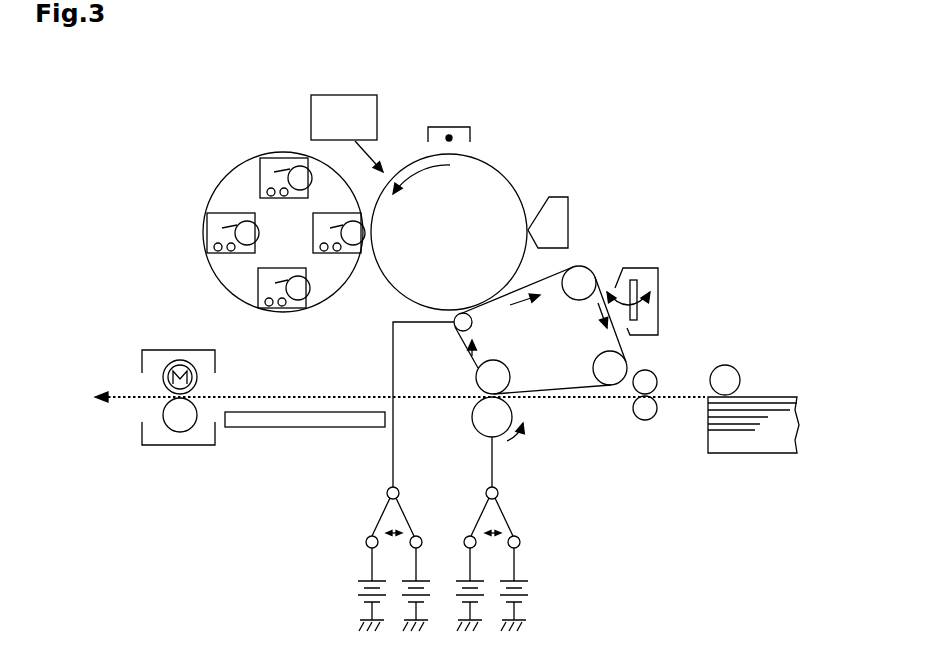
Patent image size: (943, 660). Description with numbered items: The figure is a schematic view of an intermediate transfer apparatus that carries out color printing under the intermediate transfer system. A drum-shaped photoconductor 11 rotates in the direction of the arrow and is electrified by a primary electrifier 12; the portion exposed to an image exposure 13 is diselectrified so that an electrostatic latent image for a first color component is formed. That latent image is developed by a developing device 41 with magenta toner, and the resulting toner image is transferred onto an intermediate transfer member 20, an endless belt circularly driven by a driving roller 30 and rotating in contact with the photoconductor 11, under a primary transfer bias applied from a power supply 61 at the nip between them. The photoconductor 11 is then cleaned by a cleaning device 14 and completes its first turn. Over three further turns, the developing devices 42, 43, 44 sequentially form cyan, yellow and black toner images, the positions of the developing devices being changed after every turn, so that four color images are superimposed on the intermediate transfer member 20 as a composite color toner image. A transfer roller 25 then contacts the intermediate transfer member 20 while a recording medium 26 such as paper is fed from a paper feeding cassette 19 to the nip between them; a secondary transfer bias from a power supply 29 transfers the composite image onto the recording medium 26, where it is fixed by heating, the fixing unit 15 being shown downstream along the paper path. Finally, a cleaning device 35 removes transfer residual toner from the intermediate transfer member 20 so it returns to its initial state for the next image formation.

The photoconductor 11 is at (502, 172).
The primary electrifier 12 is at (450, 122).
The image exposure 13 is at (388, 138).
The cleaning device 14 is at (562, 197).
The fixing unit 15 is at (166, 350).
The paper feeding cassette 19 is at (750, 453).
The intermediate transfer member 20 is at (562, 271).
The transfer roller 25 is at (482, 434).
The recording medium 26 is at (767, 397).
The power supply 29 is at (532, 598).
The driving roller 30 is at (584, 280).
The cleaning device 35 is at (661, 300).
The developing device 41 is at (347, 268).
The developing device 42 is at (275, 158).
The developing device 43 is at (206, 224).
The developing device 44 is at (294, 310).
The power supply 61 is at (354, 594).